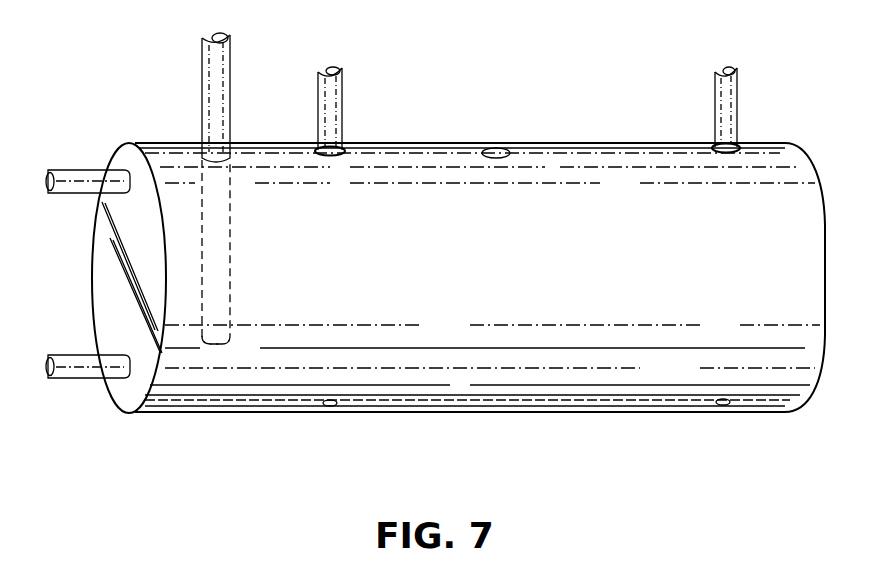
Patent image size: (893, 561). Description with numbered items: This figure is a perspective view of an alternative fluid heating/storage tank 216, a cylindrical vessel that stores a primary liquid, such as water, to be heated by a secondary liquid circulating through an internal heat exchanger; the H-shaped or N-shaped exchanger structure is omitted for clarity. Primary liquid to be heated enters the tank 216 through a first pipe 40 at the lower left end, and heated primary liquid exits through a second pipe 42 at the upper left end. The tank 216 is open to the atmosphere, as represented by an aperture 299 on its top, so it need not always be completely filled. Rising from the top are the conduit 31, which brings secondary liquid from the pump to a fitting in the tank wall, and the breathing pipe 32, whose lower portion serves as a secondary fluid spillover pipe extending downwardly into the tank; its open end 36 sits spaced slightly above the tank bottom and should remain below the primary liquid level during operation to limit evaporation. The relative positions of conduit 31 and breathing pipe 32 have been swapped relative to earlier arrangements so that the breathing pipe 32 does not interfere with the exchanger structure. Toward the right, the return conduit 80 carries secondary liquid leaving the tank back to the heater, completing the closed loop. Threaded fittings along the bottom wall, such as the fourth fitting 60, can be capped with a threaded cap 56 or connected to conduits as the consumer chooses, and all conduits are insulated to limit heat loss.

The fluid heating/storage tank 216 is at (590, 90).
The second pipe 42 is at (66, 170).
The first pipe 40 is at (66, 378).
The breathing pipe 32 is at (202, 88).
The open end 36 is at (213, 345).
The conduit 31 is at (342, 88).
The aperture 299 is at (497, 148).
The return conduit 80 is at (737, 86).
The cap 56 is at (331, 408).
The fourth fitting 60 is at (724, 406).